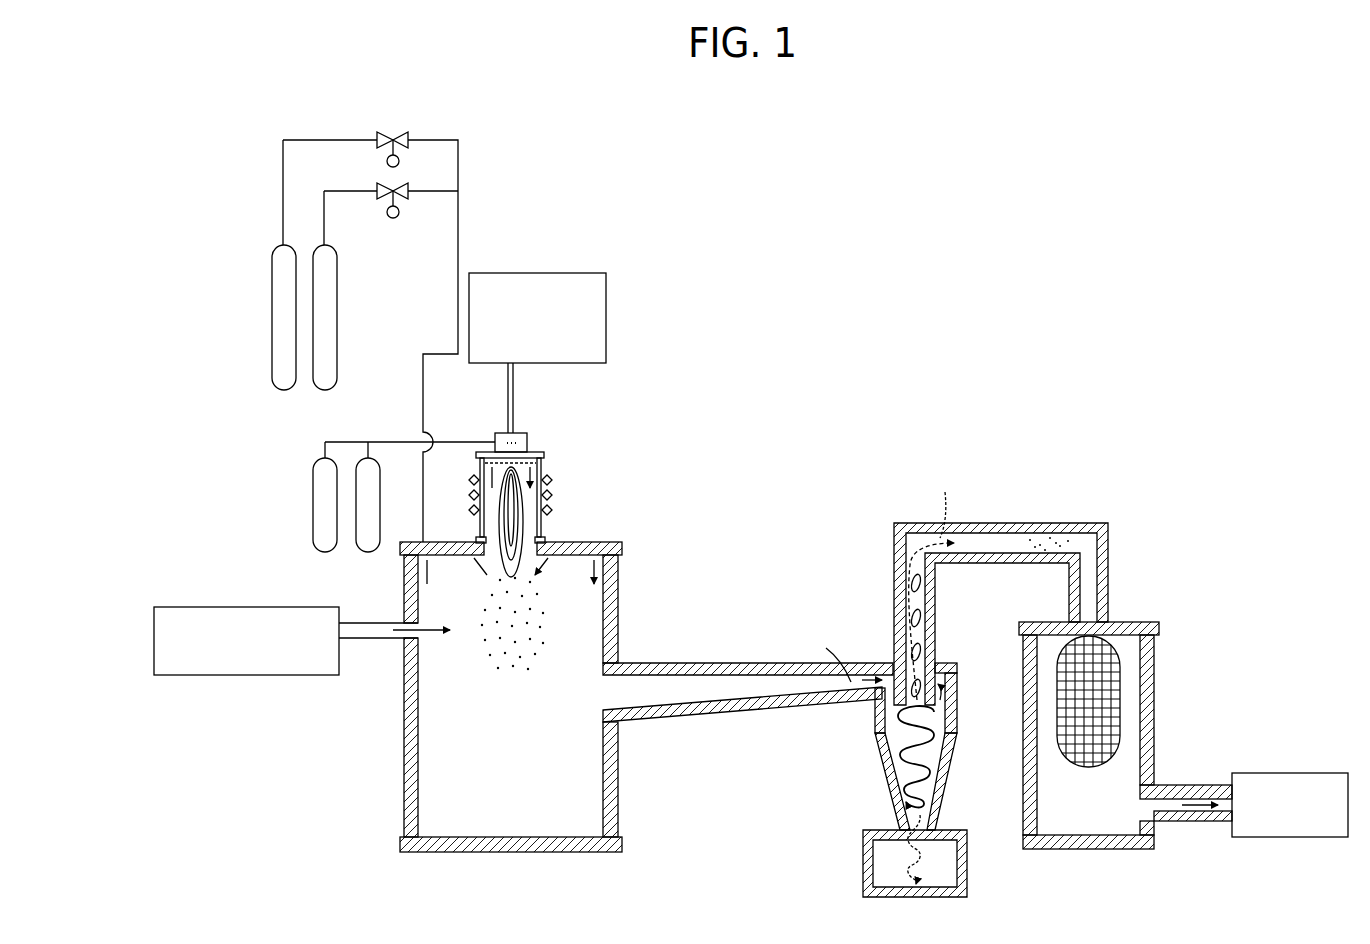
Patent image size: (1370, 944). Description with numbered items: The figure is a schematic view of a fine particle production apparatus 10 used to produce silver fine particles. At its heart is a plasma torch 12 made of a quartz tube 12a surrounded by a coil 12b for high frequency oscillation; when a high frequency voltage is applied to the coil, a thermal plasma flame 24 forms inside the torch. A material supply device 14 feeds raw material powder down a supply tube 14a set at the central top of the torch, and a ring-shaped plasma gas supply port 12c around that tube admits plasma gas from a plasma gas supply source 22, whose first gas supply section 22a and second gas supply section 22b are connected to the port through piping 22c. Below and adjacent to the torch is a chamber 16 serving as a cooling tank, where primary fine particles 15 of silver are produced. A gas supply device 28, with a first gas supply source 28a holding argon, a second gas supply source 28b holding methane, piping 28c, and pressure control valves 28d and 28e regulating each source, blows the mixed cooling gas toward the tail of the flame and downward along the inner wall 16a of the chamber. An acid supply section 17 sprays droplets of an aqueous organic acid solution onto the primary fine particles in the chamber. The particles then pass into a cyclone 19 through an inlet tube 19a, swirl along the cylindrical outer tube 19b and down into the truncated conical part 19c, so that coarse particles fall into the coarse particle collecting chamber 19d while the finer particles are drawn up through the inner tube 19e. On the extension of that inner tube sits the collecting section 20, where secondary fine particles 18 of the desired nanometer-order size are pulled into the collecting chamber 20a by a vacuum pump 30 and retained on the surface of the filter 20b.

The production apparatus 10 is at (924, 236).
The plasma torch 12 is at (566, 472).
The quartz tube 12a is at (545, 521).
The coil for high frequency oscillation 12b is at (552, 497).
The plasma gas supply port 12c is at (521, 460).
The material supply device 14 is at (607, 303).
The supply tube 14a is at (507, 402).
The primary fine particles 15 is at (520, 626).
The chamber 16 is at (626, 590).
The inner wall 16a is at (405, 815).
The acid supply section 17 is at (240, 605).
The secondary fine particles 18 is at (1058, 543).
The cyclone 19 is at (883, 650).
The inlet tube 19a is at (862, 700).
The outer tube 19b is at (947, 697).
The truncated conical part 19c is at (940, 786).
The coarse particle collecting chamber 19d is at (948, 860).
The inner tube 19e is at (921, 656).
The collecting section 20 is at (1052, 618).
The collecting chamber 20a is at (1112, 772).
The filter 20b is at (1122, 700).
The plasma gas supply source 22 is at (290, 480).
The first gas supply section 22a is at (323, 553).
The second gas supply section 22b is at (369, 553).
The piping 22c is at (382, 440).
The thermal plasma flame 24 is at (487, 521).
The gas supply device 28 is at (427, 126).
The first gas supply source 28a is at (272, 330).
The second gas supply source 28b is at (337, 330).
The piping 28c is at (432, 354).
The pressure control valve 28d is at (384, 134).
The pressure control valve 28e is at (404, 205).
The vacuum pump 30 is at (1318, 771).